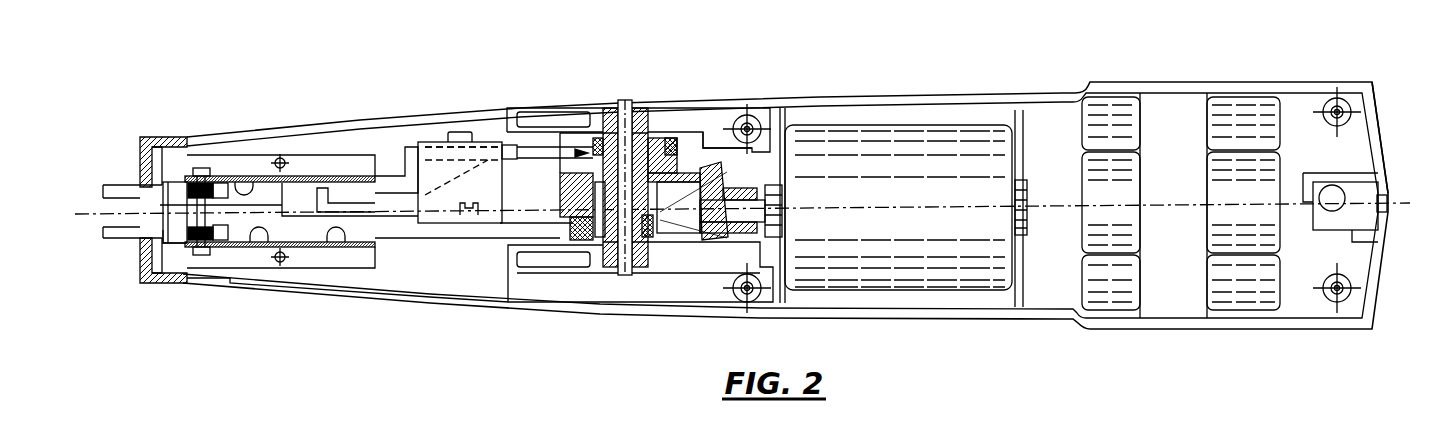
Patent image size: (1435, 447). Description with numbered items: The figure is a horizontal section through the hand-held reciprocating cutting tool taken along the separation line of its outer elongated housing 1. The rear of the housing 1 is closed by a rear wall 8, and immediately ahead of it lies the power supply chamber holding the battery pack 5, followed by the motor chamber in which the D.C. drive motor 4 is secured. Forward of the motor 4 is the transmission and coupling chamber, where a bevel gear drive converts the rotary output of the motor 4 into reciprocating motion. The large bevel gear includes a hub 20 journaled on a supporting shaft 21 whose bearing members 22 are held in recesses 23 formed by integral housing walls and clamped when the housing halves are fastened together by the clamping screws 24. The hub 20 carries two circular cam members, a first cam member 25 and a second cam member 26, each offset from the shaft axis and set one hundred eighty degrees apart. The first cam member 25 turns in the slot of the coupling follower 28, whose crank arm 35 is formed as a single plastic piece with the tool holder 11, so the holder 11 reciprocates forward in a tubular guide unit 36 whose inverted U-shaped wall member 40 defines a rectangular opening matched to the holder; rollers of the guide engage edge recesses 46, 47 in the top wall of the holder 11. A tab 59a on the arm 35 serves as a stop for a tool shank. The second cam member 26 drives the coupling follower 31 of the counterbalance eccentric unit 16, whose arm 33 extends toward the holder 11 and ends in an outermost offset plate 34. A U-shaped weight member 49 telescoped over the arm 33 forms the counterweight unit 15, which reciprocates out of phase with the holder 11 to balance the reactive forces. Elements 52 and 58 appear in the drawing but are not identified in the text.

The housing 1 is at (967, 94).
The drive motor 4 is at (898, 233).
The battery pack 5 is at (1165, 173).
The rear wall 8 is at (1383, 140).
The tool holder 11 is at (262, 198).
The counterweight unit 15 is at (455, 190).
The eccentric unit 16 is at (570, 148).
The hub 20 is at (573, 203).
The supporting shaft 21 is at (625, 110).
The bearing members 22 is at (610, 108).
The recesses 23 is at (594, 122).
The clamping screws 24 is at (752, 127).
The first cam member 25 is at (596, 243).
The second cam member 26 is at (657, 140).
The coupling follower 28 is at (660, 233).
The coupling follower 31 is at (683, 147).
The arm 33 is at (535, 145).
The offset plate 34 is at (390, 178).
The crank arm 35 is at (400, 262).
The tubular guide unit 36 is at (307, 173).
The U-shaped wall member 40 is at (237, 182).
The edge recess 46 is at (175, 187).
The edge recess 47 is at (178, 233).
The weight member 49 is at (472, 223).
The lower guide rail 52 is at (338, 237).
The tube 58 is at (140, 175).
The tab 59a is at (482, 145).